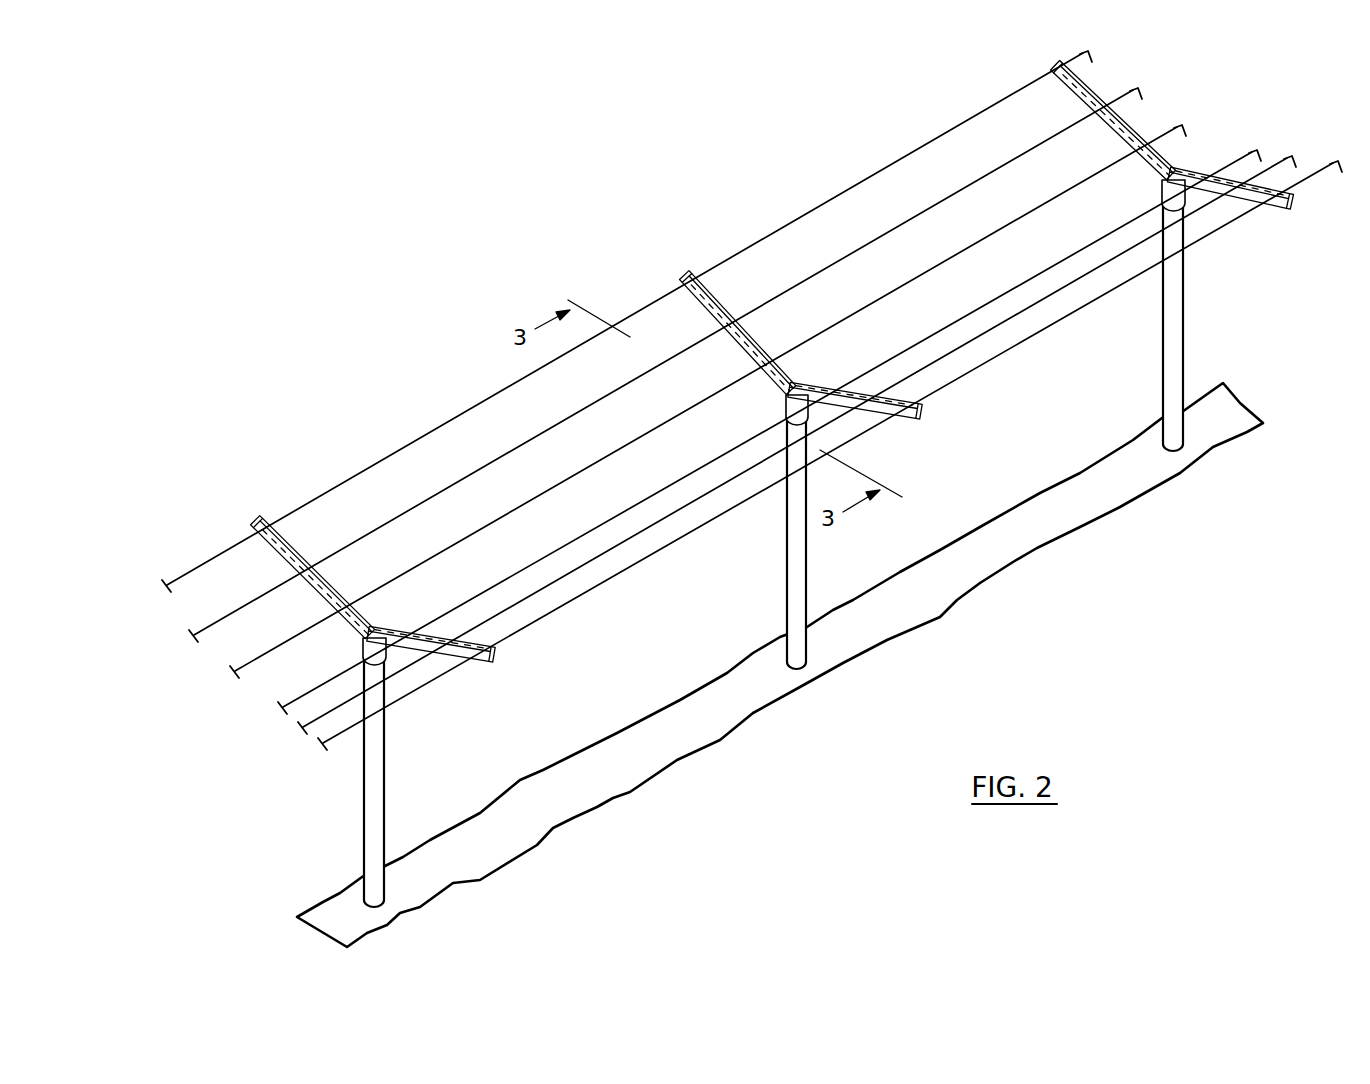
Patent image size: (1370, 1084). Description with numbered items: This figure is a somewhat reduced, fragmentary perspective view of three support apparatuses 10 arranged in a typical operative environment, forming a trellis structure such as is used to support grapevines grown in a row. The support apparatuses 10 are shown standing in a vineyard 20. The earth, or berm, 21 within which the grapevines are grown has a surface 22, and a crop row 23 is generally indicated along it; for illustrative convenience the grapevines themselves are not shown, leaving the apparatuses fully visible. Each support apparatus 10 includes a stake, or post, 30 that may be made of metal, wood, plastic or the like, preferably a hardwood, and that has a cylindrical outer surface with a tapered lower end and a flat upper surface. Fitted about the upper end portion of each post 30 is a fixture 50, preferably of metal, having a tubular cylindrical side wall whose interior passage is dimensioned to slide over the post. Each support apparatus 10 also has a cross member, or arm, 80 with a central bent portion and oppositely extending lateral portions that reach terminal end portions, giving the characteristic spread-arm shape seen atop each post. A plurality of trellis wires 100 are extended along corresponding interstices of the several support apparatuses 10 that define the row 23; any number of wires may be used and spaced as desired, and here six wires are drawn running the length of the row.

The support apparatus 10 is at (347, 740).
The vineyard 20 is at (757, 727).
The earth, or berm 21 is at (571, 770).
The surface 22 is at (688, 725).
The crop row 23 is at (750, 238).
The stake, or post 30 is at (384, 769).
The fixture 50 is at (364, 650).
The cross member, or arm 80 is at (287, 530).
The trellis wires 100 is at (423, 505).